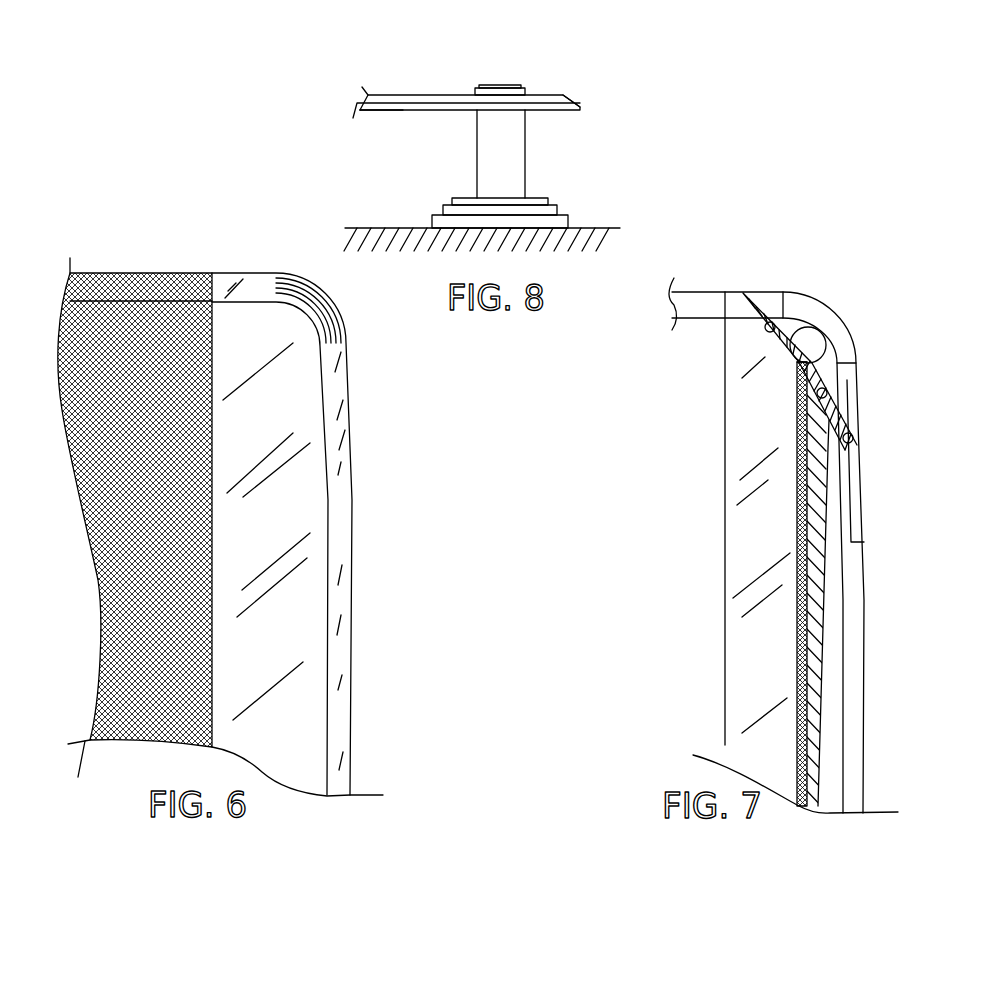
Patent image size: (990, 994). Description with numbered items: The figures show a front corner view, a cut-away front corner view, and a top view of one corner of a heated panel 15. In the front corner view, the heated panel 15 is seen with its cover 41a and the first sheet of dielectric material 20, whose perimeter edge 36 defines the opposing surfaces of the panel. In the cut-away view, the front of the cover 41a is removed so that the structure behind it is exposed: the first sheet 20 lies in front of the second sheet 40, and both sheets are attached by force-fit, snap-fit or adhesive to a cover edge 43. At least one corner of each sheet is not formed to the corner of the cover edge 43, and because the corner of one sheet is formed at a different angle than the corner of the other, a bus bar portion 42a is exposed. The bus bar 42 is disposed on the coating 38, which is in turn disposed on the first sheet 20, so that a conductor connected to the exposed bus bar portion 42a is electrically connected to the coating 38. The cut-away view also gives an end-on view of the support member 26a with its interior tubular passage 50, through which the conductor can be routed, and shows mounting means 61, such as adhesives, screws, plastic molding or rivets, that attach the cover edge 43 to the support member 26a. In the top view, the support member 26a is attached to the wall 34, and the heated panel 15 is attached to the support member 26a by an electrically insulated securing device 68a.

In FIG. 6, the heated panel 15 is at (105, 222).
In FIG. 8, the heated panel 15 is at (601, 64).
In FIG. 7, the heated panel 15 is at (806, 236).
In FIG. 6, the first sheet of dielectric material 20 is at (163, 313).
In FIG. 8, the first sheet of dielectric material 20 is at (388, 96).
In FIG. 7, the first sheet of dielectric material 20 is at (815, 457).
In FIG. 8, the support member 26a is at (550, 167).
In FIG. 7, the support member 26a is at (827, 340).
In FIG. 8, the wall 34 is at (600, 227).
In FIG. 7, the perimeter edge 36 is at (844, 775).
In FIG. 7, the coating 38 is at (832, 648).
In FIG. 8, the second sheet 40 is at (408, 108).
In FIG. 7, the second sheet 40 is at (853, 440).
In FIG. 6, the cover 41a is at (300, 520).
In FIG. 8, the cover 41a is at (543, 95).
In FIG. 7, the bus bar 42 is at (797, 655).
In FIG. 7, the bus bar portion 42a is at (797, 390).
In FIG. 8, the cover edge 43 is at (572, 97).
In FIG. 7, the cover edge 43 is at (844, 692).
In FIG. 7, the interior tubular passage 50 is at (810, 340).
In FIG. 7, the mounting means 61 is at (827, 393).
In FIG. 8, the electrically insulated securing device 68a is at (497, 86).